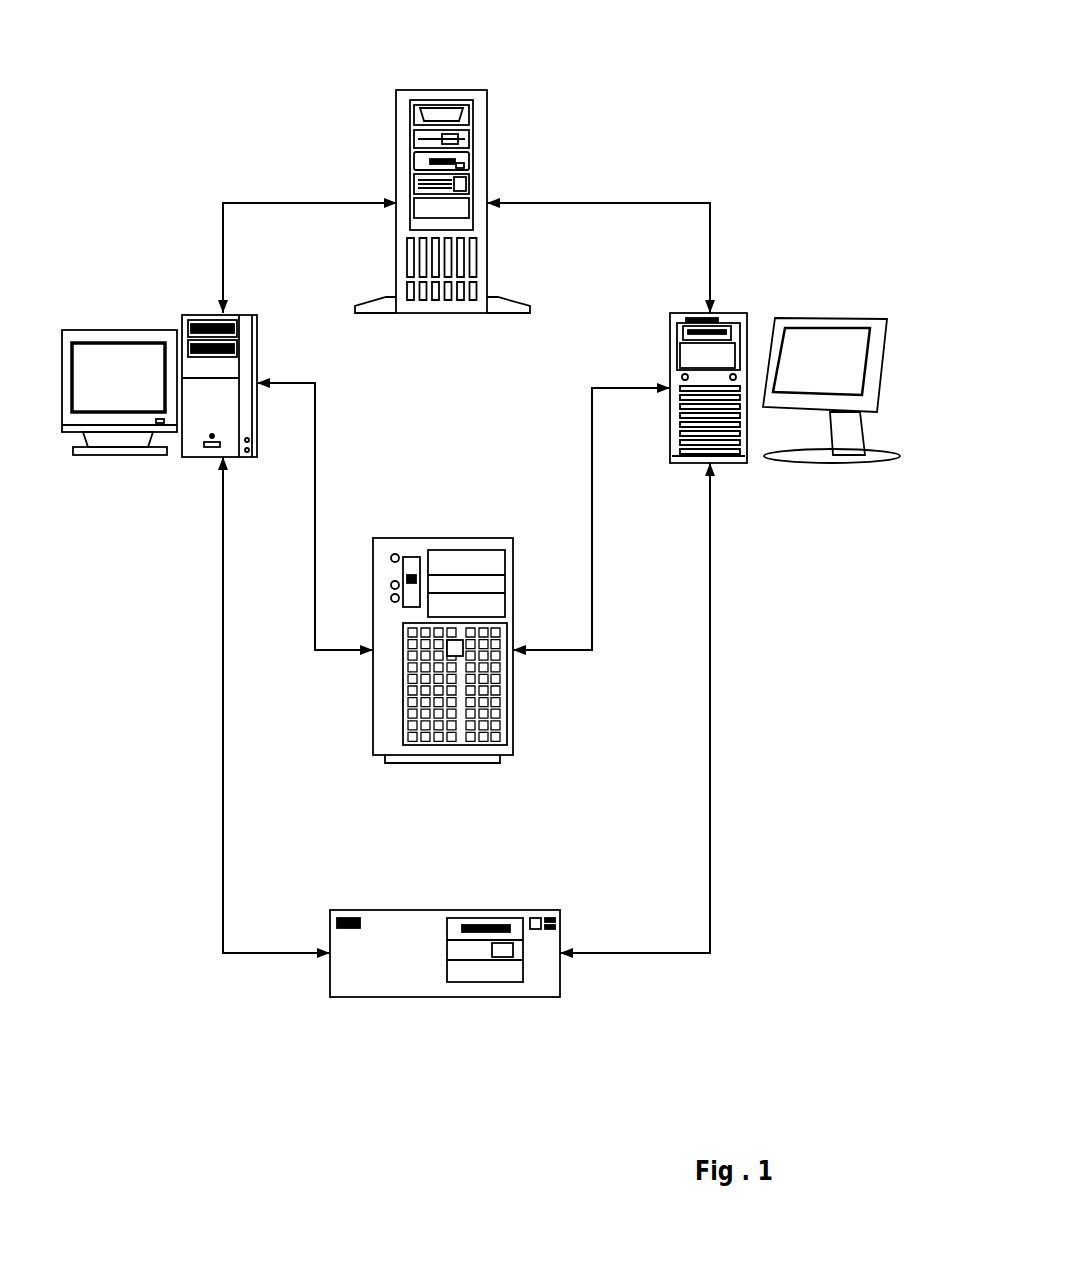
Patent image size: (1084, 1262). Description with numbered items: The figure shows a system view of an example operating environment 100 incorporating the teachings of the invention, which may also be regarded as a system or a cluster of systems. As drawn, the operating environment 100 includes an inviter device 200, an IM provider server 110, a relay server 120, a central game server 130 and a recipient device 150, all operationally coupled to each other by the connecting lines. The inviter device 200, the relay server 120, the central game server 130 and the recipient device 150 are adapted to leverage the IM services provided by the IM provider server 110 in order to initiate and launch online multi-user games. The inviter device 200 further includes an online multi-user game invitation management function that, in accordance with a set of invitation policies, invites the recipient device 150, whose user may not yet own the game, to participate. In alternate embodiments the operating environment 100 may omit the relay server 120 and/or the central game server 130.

The operating environment 100 is at (674, 88).
The IM provider server 110 is at (446, 90).
The relay server 120 is at (455, 538).
The central game server 130 is at (452, 910).
The recipient device 150 is at (838, 318).
The inviter device 200 is at (235, 315).